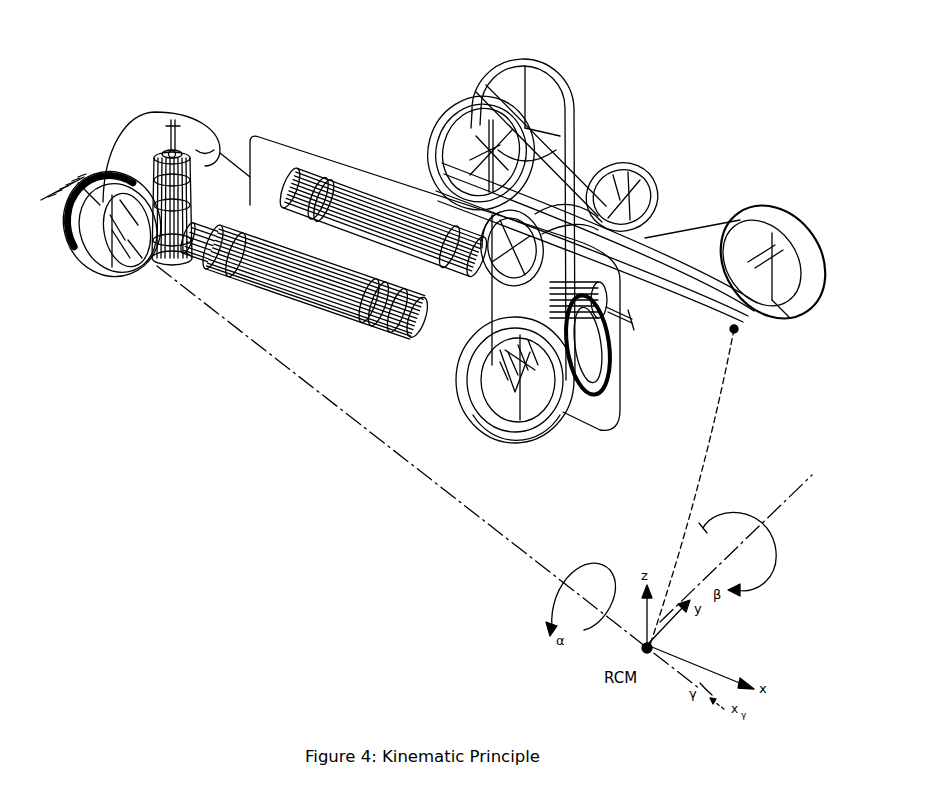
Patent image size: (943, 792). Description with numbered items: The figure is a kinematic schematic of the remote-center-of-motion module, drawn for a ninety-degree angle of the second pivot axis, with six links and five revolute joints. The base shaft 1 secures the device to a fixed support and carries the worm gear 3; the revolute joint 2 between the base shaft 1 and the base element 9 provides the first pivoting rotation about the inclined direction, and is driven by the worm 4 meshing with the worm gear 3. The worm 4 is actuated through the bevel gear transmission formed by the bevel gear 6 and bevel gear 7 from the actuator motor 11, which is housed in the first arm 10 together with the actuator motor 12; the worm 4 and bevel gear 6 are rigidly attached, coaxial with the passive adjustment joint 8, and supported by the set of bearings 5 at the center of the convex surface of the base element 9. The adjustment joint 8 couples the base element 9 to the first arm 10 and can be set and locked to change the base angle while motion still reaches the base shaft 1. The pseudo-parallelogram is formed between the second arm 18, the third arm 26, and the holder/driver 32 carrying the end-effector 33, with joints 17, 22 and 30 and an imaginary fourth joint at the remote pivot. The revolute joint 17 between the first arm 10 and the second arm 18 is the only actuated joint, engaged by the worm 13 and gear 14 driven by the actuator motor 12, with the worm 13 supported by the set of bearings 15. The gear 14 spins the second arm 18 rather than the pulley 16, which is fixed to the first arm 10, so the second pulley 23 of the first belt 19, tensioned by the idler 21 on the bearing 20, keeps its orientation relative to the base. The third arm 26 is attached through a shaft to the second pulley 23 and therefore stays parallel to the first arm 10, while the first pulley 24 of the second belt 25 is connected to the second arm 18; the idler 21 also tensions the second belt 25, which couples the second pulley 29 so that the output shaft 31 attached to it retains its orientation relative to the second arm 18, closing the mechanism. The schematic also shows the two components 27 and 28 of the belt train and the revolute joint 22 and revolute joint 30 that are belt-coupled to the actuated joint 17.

The base shaft 1 is at (64, 181).
The revolute joint 2 is at (120, 268).
The worm gear 3 is at (77, 270).
The worm 4 is at (162, 165).
The set of bearings 5 is at (178, 140).
The bevel gear 6 is at (173, 266).
The bevel gear 7 is at (203, 248).
The adjustment joint 8 is at (205, 167).
The base element 9 is at (204, 121).
The first arm 10 is at (286, 137).
The actuator motor 11 is at (420, 326).
The actuator motor 12 is at (291, 188).
The worm 13 is at (606, 293).
The gear 14 is at (570, 378).
The set of bearings 15 is at (628, 327).
The pulley 16 is at (547, 428).
The revolute joint 17 is at (527, 362).
The second arm 18 is at (484, 395).
The first belt 19 is at (459, 380).
The bearing 20 is at (451, 200).
The idler 21 is at (498, 280).
The revolute joint 22 is at (486, 141).
The second pulley 23 is at (484, 78).
The first pulley 24 is at (450, 115).
The second belt 25 is at (430, 137).
The third arm 26 is at (692, 238).
The pulley 27 is at (610, 168).
The pulley ring 28 is at (644, 191).
The second pulley 29 is at (743, 217).
The revolute joint 30 is at (770, 258).
The output shaft 31 is at (787, 308).
The holder/driver 32 is at (740, 331).
The end-effector 33 is at (713, 423).